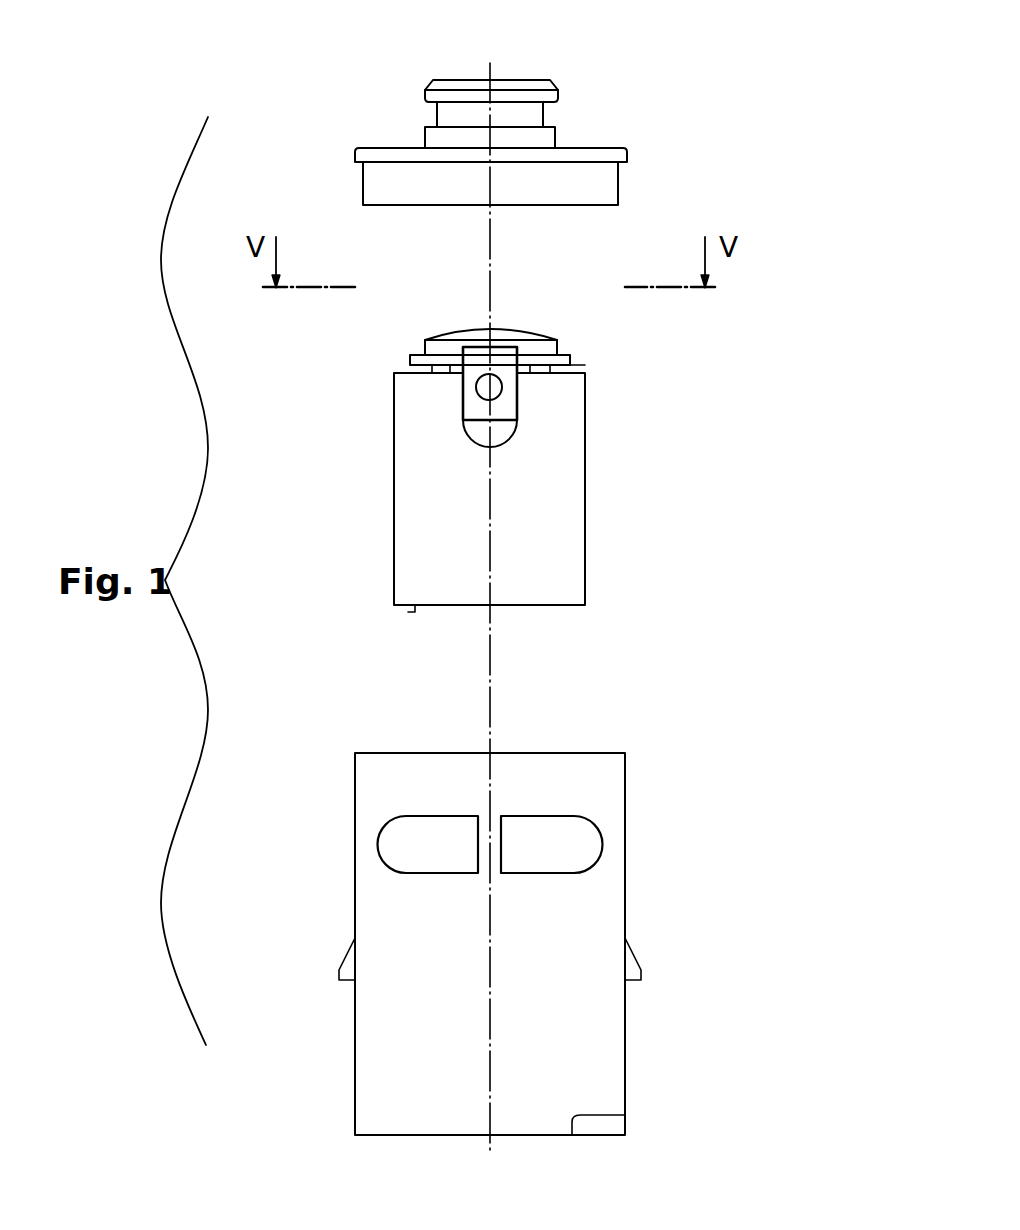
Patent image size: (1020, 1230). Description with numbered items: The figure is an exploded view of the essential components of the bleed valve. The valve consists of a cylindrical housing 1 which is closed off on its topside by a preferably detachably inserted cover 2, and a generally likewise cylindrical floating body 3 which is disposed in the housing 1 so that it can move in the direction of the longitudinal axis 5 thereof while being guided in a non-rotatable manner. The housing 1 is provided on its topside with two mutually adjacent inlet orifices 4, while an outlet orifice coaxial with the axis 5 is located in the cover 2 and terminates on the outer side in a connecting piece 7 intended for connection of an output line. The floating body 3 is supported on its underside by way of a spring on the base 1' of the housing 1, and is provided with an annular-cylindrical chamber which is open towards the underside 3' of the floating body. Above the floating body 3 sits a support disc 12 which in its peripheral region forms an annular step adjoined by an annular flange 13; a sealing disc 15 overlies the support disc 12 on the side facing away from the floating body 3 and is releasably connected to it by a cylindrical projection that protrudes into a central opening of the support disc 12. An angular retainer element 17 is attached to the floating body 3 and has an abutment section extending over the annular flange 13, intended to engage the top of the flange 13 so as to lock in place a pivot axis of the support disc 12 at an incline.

The cylindrical housing 1 is at (510, 944).
The base of the housing 1' is at (629, 1116).
The cover 2 is at (594, 175).
The floating body 3 is at (519, 489).
The underside of the floating body 3' is at (375, 620).
The inlet orifices 4 is at (406, 845).
The longitudinal axis 5 is at (490, 684).
The connecting piece 7 is at (548, 81).
The support disc 12 is at (432, 346).
The annular flange 13 is at (420, 350).
The sealing disc 15 is at (476, 330).
The angular retainer element 17 is at (505, 400).